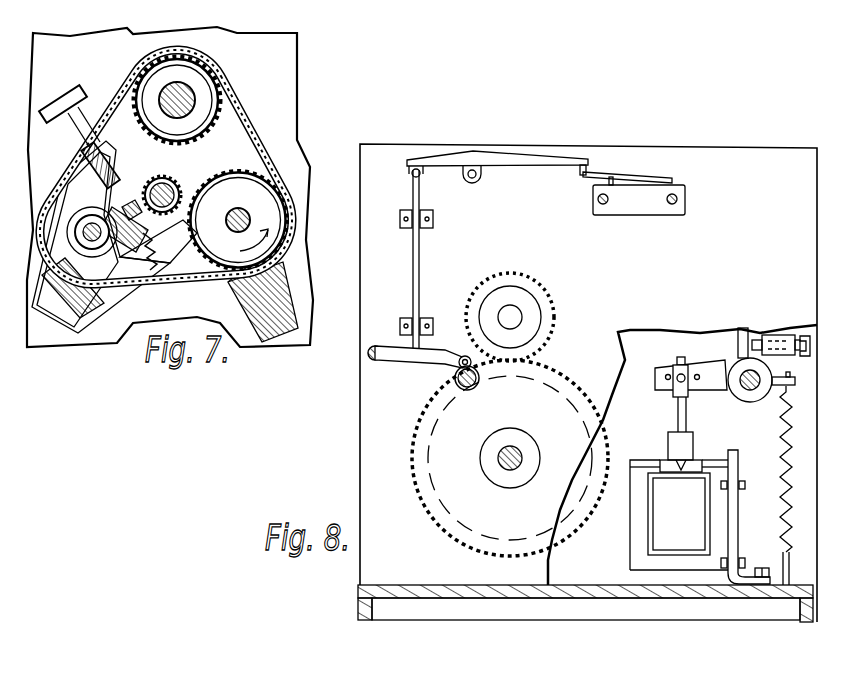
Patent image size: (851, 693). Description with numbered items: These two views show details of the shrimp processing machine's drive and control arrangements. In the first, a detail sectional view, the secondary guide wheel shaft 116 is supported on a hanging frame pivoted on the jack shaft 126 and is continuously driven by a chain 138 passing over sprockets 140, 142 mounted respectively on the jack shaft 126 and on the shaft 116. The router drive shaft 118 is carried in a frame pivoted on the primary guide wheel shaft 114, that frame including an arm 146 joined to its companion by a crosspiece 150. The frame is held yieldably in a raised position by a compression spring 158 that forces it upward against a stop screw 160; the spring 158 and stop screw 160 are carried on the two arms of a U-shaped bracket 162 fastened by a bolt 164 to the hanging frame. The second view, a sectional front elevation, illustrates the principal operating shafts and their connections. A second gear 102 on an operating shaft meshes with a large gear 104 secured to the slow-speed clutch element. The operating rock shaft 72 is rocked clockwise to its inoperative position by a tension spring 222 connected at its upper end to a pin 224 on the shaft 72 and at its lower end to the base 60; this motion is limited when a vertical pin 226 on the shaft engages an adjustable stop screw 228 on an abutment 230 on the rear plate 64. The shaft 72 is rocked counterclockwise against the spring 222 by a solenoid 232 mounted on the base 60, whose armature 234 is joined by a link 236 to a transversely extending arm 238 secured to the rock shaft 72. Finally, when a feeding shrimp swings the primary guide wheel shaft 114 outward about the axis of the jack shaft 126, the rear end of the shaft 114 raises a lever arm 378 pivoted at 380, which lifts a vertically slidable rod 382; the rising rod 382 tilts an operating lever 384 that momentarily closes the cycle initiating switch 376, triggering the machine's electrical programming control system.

In FIG. 8, the base 60 is at (462, 590).
In FIG. 8, the rear plate 64 is at (605, 592).
In FIG. 8, the operating rock shaft 72 is at (745, 390).
In FIG. 8, the second gear 102 is at (551, 283).
In FIG. 8, the large gear 104 is at (573, 376).
In FIG. 7, the shaft 114 is at (86, 220).
In FIG. 8, the shaft 114 is at (467, 391).
In FIG. 7, the shaft 116 is at (243, 215).
In FIG. 7, the drive shaft 118 is at (183, 204).
In FIG. 7, the jack shaft 126 is at (185, 86).
In FIG. 7, the chain 138 is at (252, 121).
In FIG. 7, the sprocket 140 is at (200, 97).
In FIG. 7, the sprocket 142 is at (280, 217).
In FIG. 7, the arm 146 is at (140, 180).
In FIG. 7, the crosspiece 150 is at (173, 256).
In FIG. 7, the compression spring 158 is at (155, 268).
In FIG. 7, the stop screw 160 is at (77, 88).
In FIG. 7, the U-shaped bracket 162 is at (92, 308).
In FIG. 7, the bolt 164 is at (48, 323).
In FIG. 8, the tension spring 222 is at (783, 500).
In FIG. 8, the pin 224 is at (782, 392).
In FIG. 8, the vertical pin 226 is at (740, 332).
In FIG. 8, the adjustable stop screw 228 is at (767, 334).
In FIG. 8, the abutment 230 is at (781, 335).
In FIG. 8, the solenoid 232 is at (647, 530).
In FIG. 8, the armature 234 is at (668, 441).
In FIG. 8, the link 236 is at (672, 406).
In FIG. 8, the transversely extending arm 238 is at (700, 363).
In FIG. 8, the cycle initiating switch 376 is at (598, 172).
In FIG. 8, the lever arm 378 is at (455, 368).
In FIG. 8, the pivot 380 is at (370, 355).
In FIG. 8, the vertically slidable rod 382 is at (422, 272).
In FIG. 8, the operating lever 384 is at (540, 158).